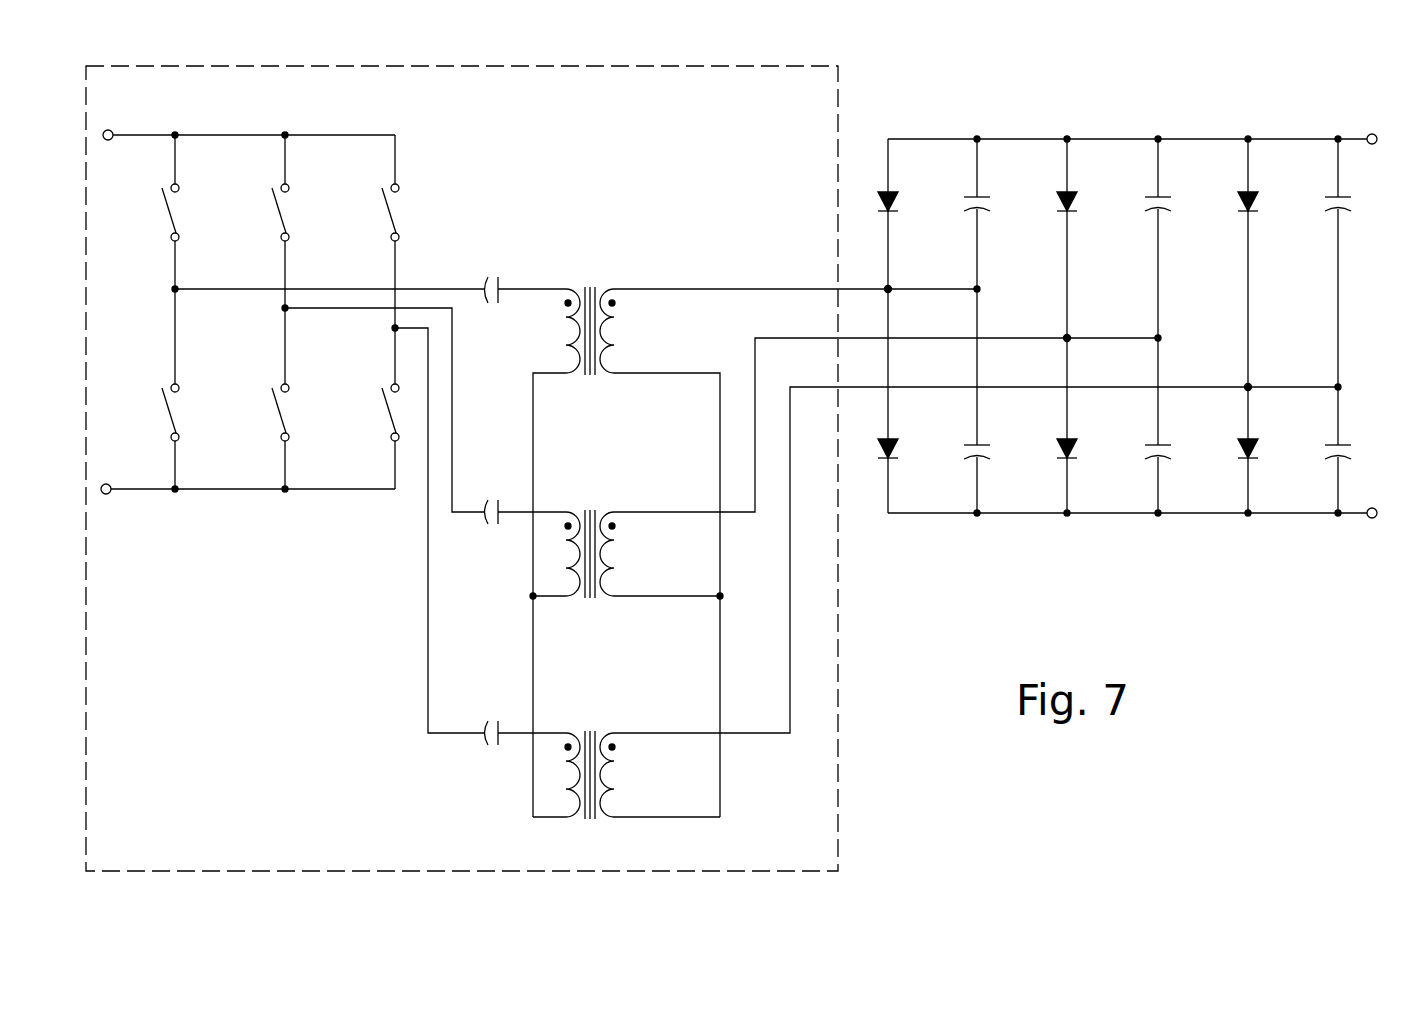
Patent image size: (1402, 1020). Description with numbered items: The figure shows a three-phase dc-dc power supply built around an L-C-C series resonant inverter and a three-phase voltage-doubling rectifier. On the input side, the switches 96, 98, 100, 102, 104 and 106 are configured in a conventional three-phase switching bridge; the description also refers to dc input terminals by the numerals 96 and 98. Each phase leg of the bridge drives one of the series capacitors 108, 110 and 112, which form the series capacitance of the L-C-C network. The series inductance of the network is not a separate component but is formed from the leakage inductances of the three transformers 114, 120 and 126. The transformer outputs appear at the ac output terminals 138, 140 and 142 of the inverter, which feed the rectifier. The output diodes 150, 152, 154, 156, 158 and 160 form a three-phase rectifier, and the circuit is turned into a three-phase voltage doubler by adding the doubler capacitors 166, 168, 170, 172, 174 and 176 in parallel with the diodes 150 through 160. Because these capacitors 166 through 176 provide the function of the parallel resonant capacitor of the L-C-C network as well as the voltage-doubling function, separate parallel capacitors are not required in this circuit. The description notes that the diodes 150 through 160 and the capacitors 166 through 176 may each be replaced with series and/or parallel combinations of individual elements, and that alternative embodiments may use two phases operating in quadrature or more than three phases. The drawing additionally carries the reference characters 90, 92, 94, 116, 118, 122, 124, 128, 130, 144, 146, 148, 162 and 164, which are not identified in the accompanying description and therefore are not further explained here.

The inverter / transformer module (dashed enclosure) 90 is at (838, 105).
The positive DC input terminal 92 is at (244, 116).
The negative DC input terminal 94 is at (244, 470).
The switch 96 is at (170, 224).
The switch 98 is at (170, 424).
The switch 100 is at (280, 224).
The switch 102 is at (280, 424).
The switch 104 is at (390, 224).
The switch 106 is at (390, 424).
The series capacitor 108 is at (519, 288).
The series capacitor 110 is at (519, 511).
The series capacitor 112 is at (519, 732).
The transformer 114 is at (590, 375).
The primary winding of first transformer 116 is at (553, 289).
The secondary winding of first transformer 118 is at (630, 289).
The transformer 120 is at (590, 598).
The primary winding of second transformer 122 is at (553, 512).
The secondary winding of second transformer 124 is at (630, 512).
The transformer 126 is at (590, 819).
The primary winding of third transformer 128 is at (553, 733).
The secondary winding of third transformer 130 is at (630, 733).
The ac output terminal 138 is at (838, 290).
The ac output terminal 140 is at (838, 338).
The ac output terminal 142 is at (838, 387).
The first junction node 144 is at (892, 290).
The second junction node 146 is at (1071, 338).
The third junction node 148 is at (1252, 387).
The output diode 150 is at (889, 218).
The output diode 152 is at (889, 465).
The output diode 154 is at (1068, 218).
The output diode 156 is at (1068, 465).
The output diode 158 is at (1249, 218).
The output diode 160 is at (1249, 465).
The positive DC output terminal 162 is at (1339, 137).
The negative DC output terminal 164 is at (1339, 516).
The doubler capacitor 166 is at (979, 191).
The doubler capacitor 168 is at (979, 439).
The doubler capacitor 170 is at (1160, 191).
The doubler capacitor 172 is at (1160, 439).
The doubler capacitor 174 is at (1340, 191).
The doubler capacitor 176 is at (1340, 439).